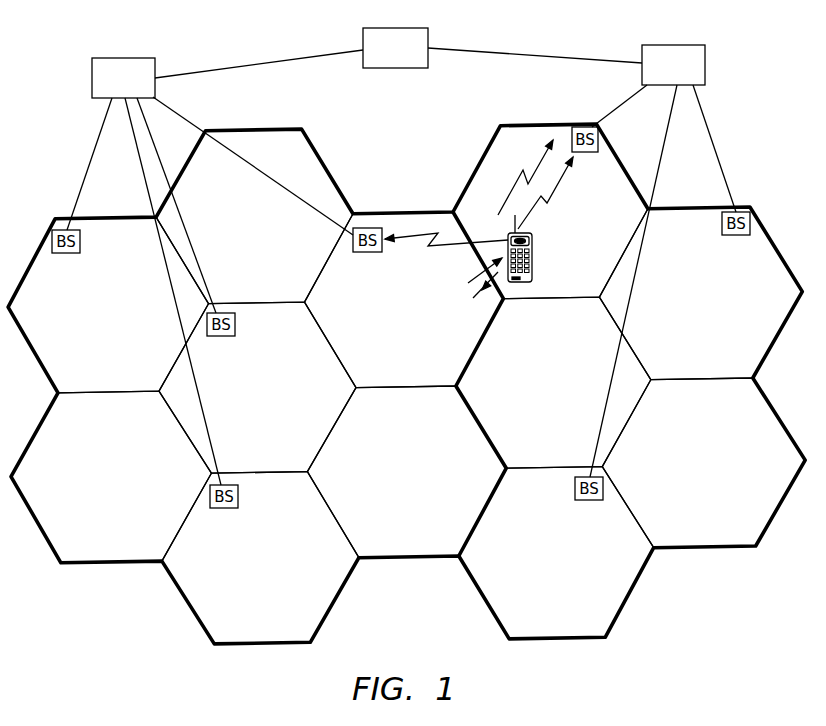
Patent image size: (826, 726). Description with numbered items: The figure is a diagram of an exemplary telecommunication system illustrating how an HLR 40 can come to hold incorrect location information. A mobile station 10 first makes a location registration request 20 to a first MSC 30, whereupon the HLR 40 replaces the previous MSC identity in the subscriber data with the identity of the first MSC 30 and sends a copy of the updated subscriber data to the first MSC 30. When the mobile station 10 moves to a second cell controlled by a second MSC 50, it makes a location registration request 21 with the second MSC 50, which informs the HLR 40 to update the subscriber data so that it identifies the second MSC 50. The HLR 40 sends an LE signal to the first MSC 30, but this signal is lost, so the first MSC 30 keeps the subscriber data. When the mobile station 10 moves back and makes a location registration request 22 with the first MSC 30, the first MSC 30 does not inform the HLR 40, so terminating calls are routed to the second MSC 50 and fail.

The mobile station 10 is at (533, 278).
The location registration request 20 is at (537, 212).
The location registration request 21 is at (439, 249).
The location registration request 22 is at (503, 208).
The first MSC 30 is at (707, 52).
The HLR 40 is at (430, 35).
The second MSC 50 is at (90, 67).